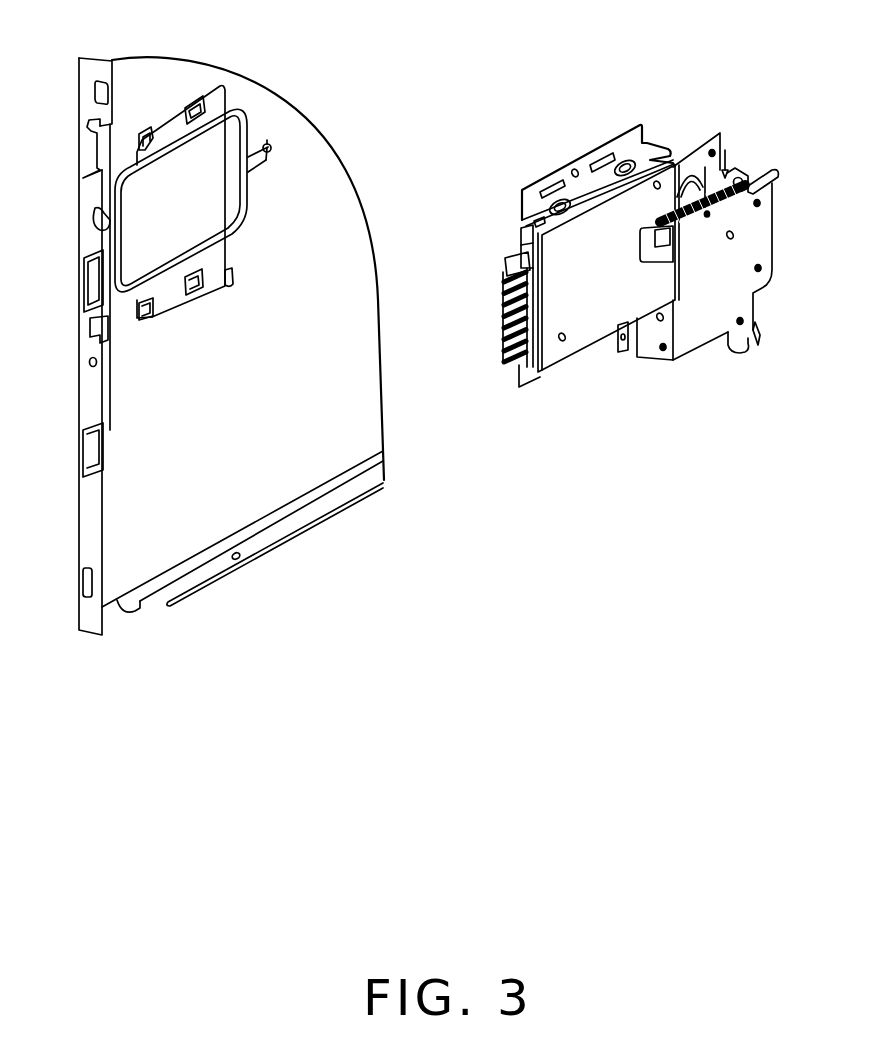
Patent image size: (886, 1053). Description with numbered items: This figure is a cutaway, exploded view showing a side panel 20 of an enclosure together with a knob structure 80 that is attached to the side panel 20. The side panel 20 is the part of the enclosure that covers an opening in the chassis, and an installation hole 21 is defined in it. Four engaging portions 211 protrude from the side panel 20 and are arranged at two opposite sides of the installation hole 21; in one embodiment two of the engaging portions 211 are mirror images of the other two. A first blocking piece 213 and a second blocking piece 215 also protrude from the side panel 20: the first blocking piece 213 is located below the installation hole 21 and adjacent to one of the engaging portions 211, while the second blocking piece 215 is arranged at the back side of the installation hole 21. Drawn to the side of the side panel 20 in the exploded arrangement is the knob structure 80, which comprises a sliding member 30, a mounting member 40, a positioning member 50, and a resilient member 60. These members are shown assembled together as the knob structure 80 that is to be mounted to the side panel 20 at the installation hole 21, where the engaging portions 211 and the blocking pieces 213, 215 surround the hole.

The side panel 20 is at (230, 343).
The installation hole 21 is at (230, 169).
The engaging portions 211 is at (198, 272).
The first blocking piece 213 is at (234, 274).
The second blocking piece 215 is at (270, 146).
The sliding member 30 is at (510, 318).
The mounting member 40 is at (592, 223).
The positioning member 50 is at (743, 247).
The resilient member 60 is at (700, 182).
The knob structure 80 is at (640, 269).